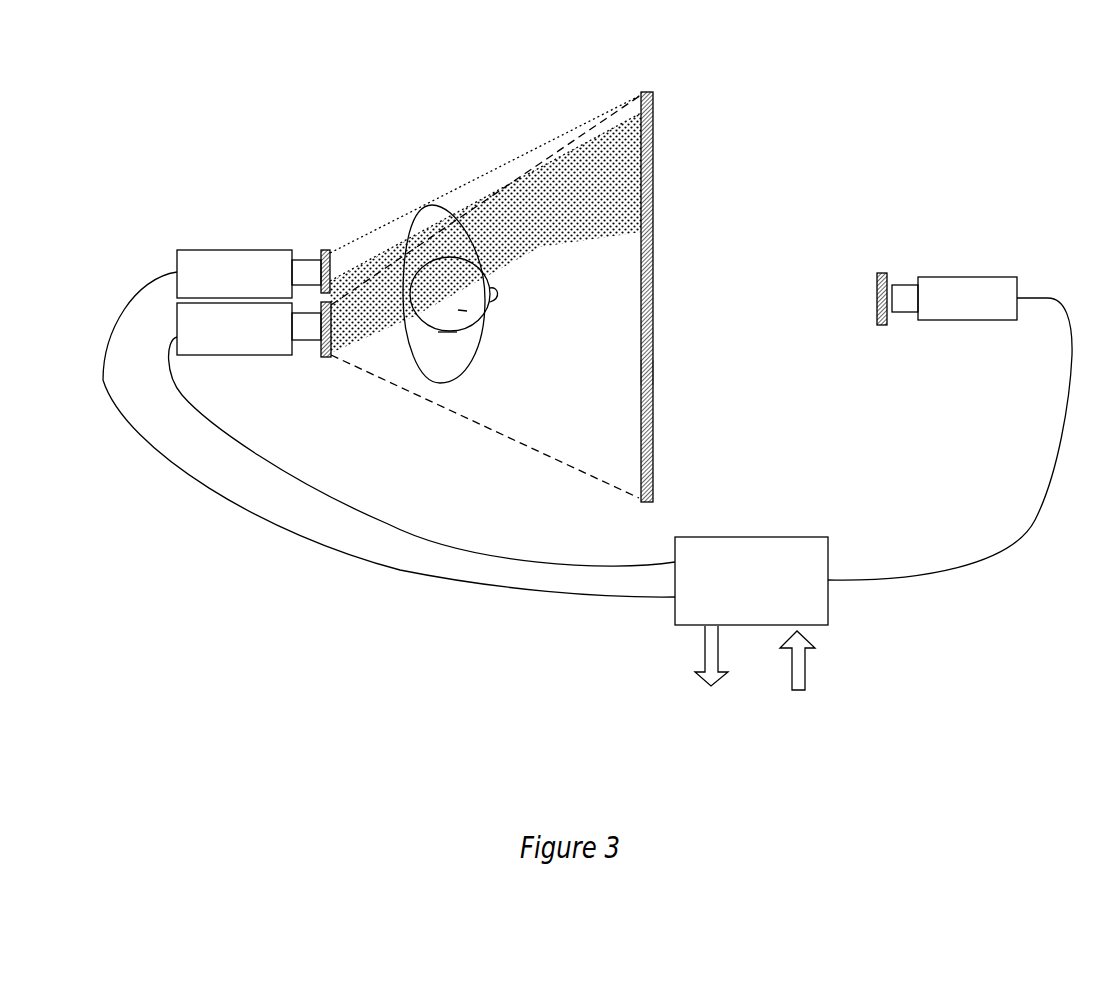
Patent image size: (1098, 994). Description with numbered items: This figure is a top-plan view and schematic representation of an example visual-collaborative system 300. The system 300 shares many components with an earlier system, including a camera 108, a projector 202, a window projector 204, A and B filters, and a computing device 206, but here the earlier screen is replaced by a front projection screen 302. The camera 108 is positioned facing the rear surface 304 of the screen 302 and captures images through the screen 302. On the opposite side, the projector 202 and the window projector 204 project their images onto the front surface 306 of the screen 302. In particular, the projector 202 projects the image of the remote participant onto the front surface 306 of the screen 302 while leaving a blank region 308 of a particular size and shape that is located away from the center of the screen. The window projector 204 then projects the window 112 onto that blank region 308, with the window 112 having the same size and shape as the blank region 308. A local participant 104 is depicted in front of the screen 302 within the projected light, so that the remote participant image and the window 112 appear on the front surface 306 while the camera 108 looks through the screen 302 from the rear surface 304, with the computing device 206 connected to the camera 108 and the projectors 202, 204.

The visual-collaborative system 300 is at (958, 67).
The window projector 204 is at (240, 248).
The projector 202 is at (250, 343).
The window 112 is at (481, 185).
The blank region 308 is at (540, 250).
The local participant 104 is at (464, 378).
The front projection screen 302 is at (655, 485).
The front surface 306 is at (638, 372).
The rear surface 304 is at (665, 368).
The camera 108 is at (987, 282).
The computing device 206 is at (822, 608).